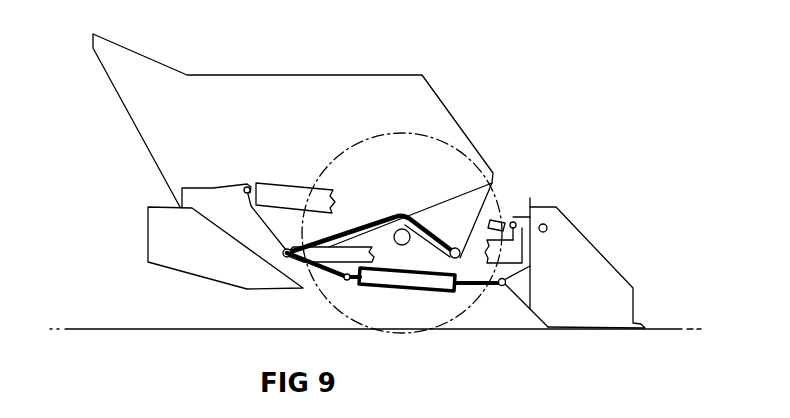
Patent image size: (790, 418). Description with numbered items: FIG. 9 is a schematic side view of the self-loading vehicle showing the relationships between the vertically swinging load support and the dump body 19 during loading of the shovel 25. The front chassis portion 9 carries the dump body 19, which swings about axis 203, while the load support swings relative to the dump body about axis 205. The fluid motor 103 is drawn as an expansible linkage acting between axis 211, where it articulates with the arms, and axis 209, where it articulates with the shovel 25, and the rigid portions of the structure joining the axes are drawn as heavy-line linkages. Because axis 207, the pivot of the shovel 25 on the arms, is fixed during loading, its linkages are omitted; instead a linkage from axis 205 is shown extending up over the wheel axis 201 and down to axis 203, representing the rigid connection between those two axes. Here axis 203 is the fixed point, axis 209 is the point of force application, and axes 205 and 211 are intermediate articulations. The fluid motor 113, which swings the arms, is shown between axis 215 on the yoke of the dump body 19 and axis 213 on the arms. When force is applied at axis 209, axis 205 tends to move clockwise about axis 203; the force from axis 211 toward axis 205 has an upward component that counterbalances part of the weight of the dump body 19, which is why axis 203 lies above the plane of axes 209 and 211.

The front chassis portion 9 is at (191, 261).
The dump body 19 is at (428, 108).
The shovel 25 is at (588, 262).
The fluid motor 103 is at (411, 282).
The fluid motor 113 is at (279, 190).
The axis 201 is at (399, 240).
The axis 203 is at (455, 248).
The axis 205 is at (283, 257).
The axis 207 is at (547, 227).
The axis 209 is at (506, 283).
The axis 211 is at (345, 279).
The axis 213 is at (512, 221).
The axis 215 is at (246, 187).